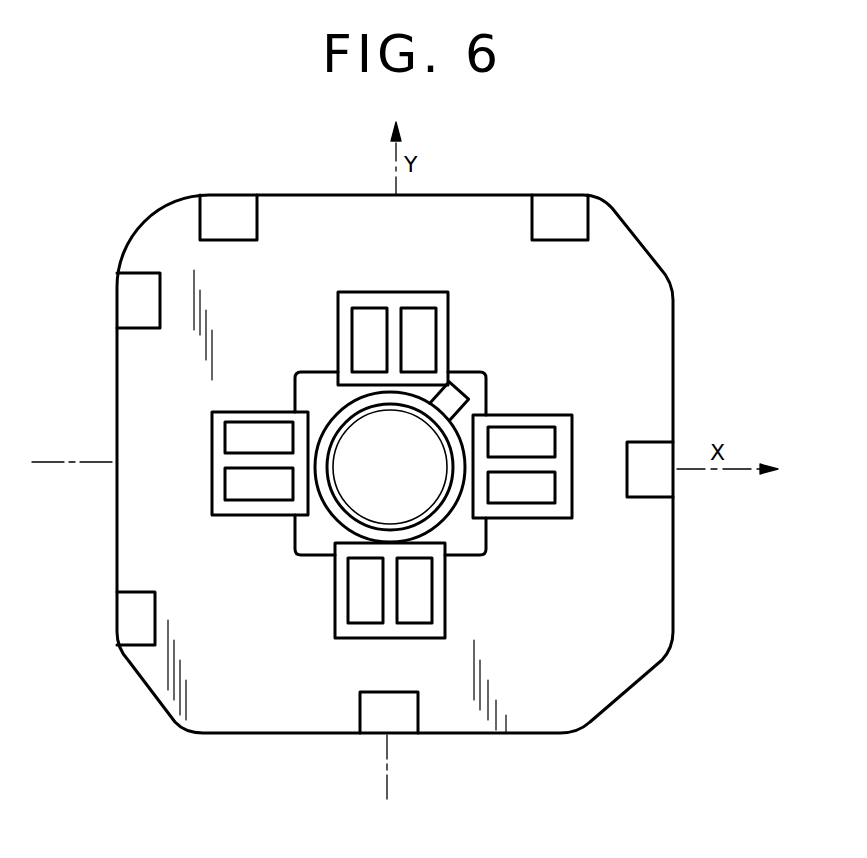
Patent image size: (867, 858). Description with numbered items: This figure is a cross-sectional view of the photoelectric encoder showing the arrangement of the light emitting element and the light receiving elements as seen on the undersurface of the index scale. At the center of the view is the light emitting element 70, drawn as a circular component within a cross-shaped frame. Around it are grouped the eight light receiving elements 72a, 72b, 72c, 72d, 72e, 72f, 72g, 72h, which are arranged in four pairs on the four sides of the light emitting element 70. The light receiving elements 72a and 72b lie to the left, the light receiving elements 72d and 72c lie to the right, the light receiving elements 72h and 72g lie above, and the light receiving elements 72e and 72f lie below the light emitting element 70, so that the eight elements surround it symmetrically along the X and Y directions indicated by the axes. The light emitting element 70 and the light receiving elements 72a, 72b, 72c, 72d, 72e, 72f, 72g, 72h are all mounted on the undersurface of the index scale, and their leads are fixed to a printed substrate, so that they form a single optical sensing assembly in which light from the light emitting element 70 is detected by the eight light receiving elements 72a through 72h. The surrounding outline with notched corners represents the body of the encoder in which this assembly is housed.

The light emitting element 70 is at (353, 487).
The light receiving element 72a is at (225, 437).
The light receiving element 72b is at (225, 486).
The light receiving element 72c is at (535, 503).
The light receiving element 72d is at (533, 427).
The light receiving element 72e is at (347, 613).
The light receiving element 72f is at (432, 607).
The light receiving element 72g is at (418, 308).
The light receiving element 72h is at (367, 308).